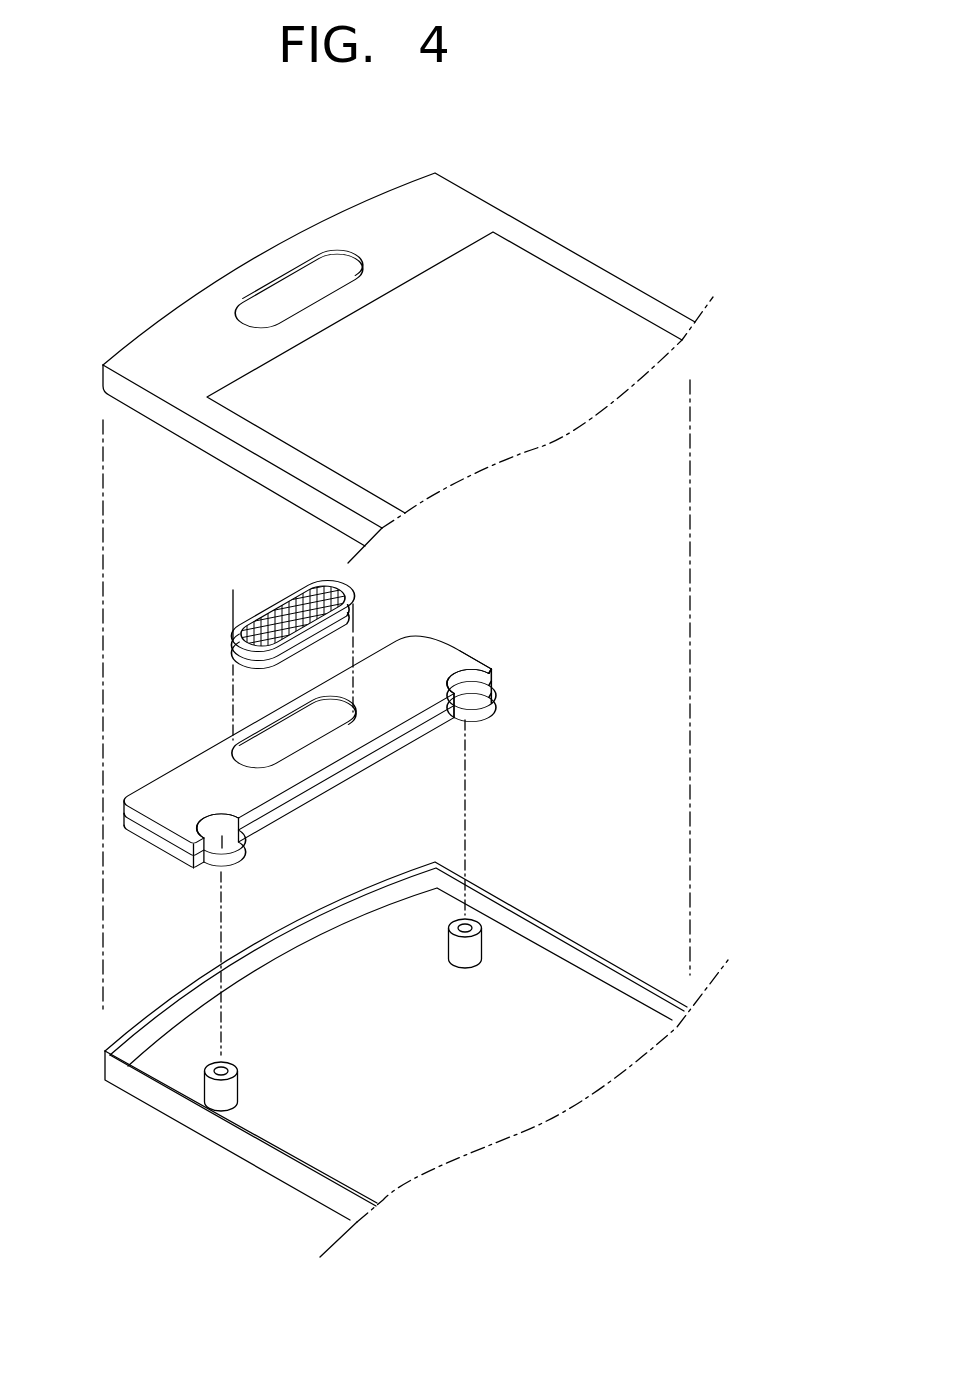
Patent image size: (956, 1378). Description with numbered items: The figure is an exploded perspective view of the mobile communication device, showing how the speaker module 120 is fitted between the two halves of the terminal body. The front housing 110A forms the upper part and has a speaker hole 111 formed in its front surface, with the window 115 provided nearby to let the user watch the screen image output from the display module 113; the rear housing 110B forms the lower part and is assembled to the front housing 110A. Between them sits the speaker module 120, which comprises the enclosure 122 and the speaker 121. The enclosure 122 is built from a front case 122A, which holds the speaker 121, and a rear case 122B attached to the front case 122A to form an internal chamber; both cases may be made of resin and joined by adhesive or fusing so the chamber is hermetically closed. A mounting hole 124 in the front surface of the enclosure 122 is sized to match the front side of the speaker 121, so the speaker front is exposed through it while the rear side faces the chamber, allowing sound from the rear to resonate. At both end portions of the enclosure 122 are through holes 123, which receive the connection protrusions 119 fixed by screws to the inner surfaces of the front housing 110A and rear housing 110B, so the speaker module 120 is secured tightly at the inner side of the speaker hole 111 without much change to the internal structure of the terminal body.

The front housing 110A is at (463, 198).
The speaker hole 111 is at (280, 275).
The window 115 is at (537, 270).
The speaker module 120 is at (375, 623).
The speaker 121 is at (250, 625).
The enclosure 122 is at (576, 660).
The front case 122A is at (497, 674).
The rear case 122B is at (496, 690).
The through holes 123 is at (217, 815).
The mounting hole 124 is at (340, 700).
The connection protrusions 119 is at (481, 940).
The display module 113 is at (560, 952).
The rear housing 110B is at (150, 1100).